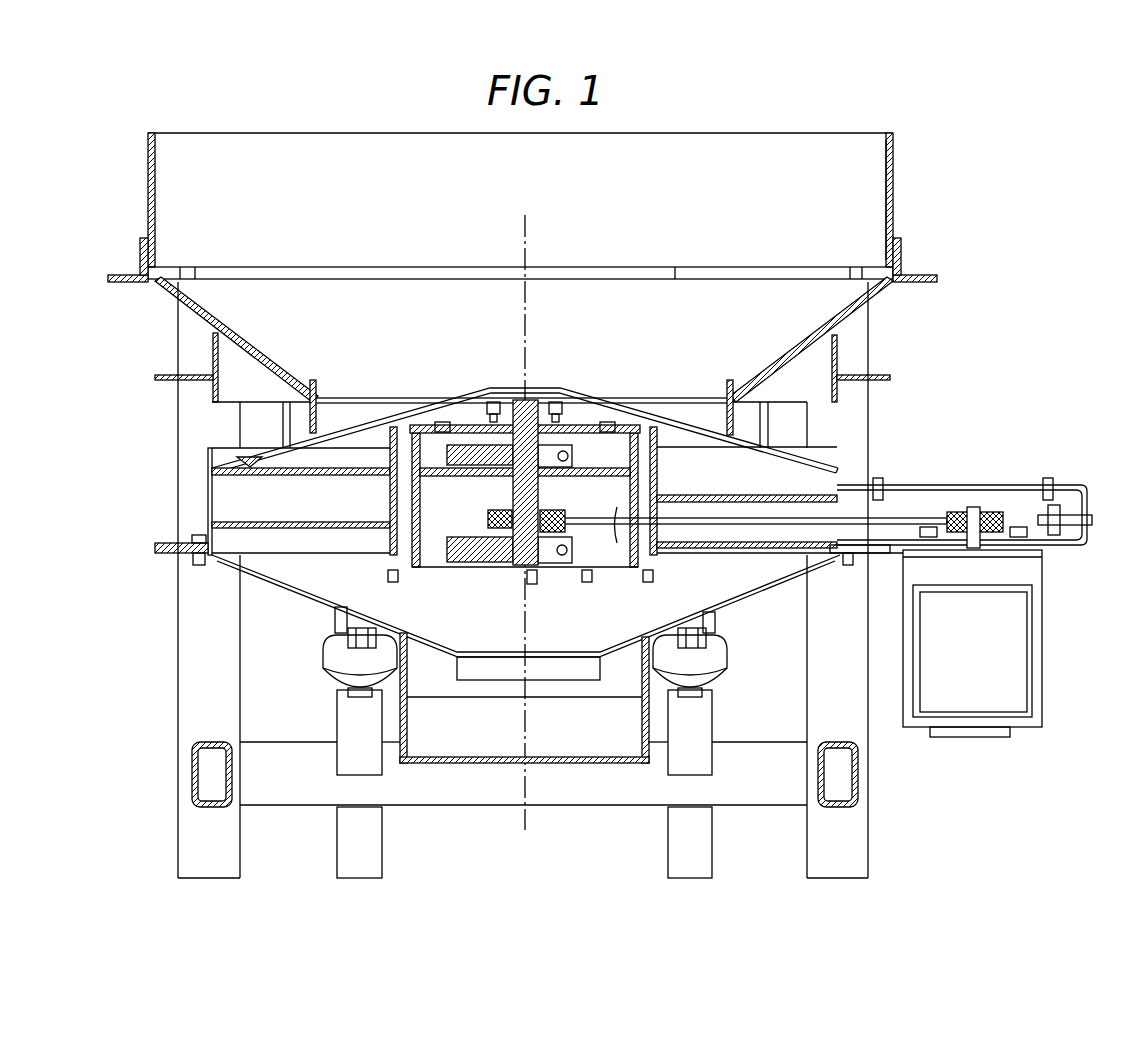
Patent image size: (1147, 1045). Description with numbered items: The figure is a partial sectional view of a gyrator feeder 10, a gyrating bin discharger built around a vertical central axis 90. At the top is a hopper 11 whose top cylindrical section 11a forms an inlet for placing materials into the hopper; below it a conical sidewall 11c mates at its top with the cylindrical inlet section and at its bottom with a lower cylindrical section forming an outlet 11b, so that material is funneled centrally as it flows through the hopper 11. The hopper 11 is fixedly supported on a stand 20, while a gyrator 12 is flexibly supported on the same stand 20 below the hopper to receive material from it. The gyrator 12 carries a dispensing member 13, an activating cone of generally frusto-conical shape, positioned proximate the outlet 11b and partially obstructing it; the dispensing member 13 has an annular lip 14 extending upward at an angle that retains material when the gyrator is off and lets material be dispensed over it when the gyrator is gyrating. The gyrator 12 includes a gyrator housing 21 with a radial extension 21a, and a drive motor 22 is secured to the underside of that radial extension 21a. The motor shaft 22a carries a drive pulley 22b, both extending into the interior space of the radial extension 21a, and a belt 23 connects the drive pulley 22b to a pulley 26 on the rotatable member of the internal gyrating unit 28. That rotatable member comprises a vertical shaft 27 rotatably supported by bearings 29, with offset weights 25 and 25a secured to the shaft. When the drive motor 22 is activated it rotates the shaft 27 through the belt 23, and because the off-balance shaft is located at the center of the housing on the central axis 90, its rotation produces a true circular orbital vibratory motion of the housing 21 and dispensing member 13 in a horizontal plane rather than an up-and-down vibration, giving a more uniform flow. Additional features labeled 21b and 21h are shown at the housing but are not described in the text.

The gyrator feeder 10 is at (732, 122).
The hopper 11 is at (895, 208).
The top cylindrical section 11a is at (895, 162).
The outlet 11b is at (832, 416).
The conical sidewall 11c is at (863, 307).
The gyrator 12 is at (749, 612).
The dispensing member 13 is at (367, 422).
The annular lip 14 is at (243, 460).
The stand 20 is at (868, 826).
The gyrator housing 21 is at (208, 487).
The radial extension 21a is at (927, 485).
The mounting plate 21b is at (172, 546).
The mounting bolt 21h is at (165, 553).
The drive motor 22 is at (980, 662).
The motor shaft 22a is at (968, 508).
The drive pulley 22b is at (1027, 520).
The belt 23 is at (843, 522).
The offset weight 25 is at (447, 545).
The offset weight 25a is at (465, 457).
The pulley 26 is at (565, 530).
The vertical shaft 27 is at (540, 562).
The internal gyrating unit 28 is at (574, 507).
The bearings 29 is at (570, 463).
The vertical central axis 90 is at (525, 238).